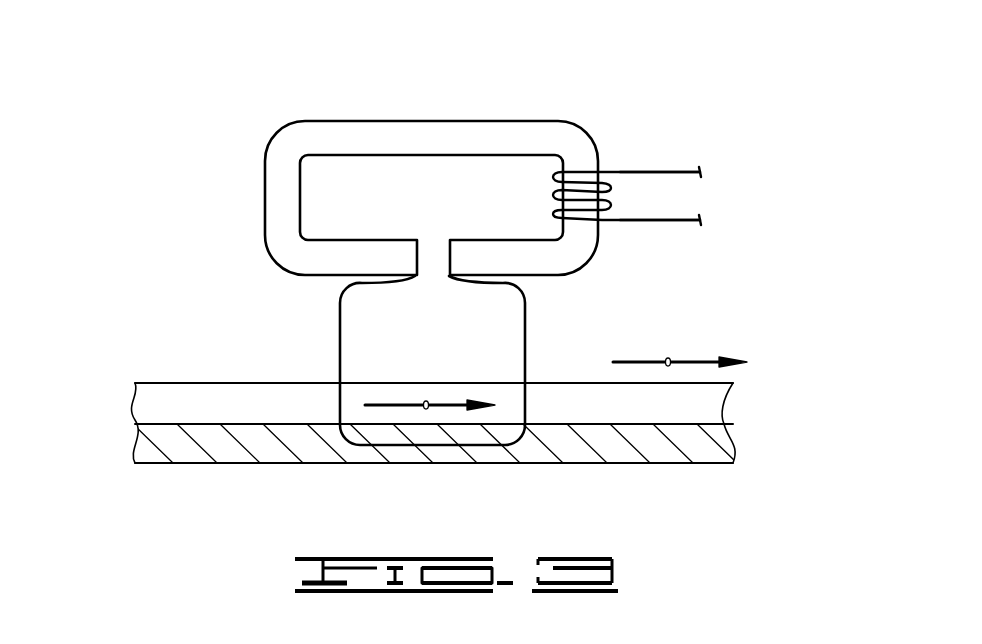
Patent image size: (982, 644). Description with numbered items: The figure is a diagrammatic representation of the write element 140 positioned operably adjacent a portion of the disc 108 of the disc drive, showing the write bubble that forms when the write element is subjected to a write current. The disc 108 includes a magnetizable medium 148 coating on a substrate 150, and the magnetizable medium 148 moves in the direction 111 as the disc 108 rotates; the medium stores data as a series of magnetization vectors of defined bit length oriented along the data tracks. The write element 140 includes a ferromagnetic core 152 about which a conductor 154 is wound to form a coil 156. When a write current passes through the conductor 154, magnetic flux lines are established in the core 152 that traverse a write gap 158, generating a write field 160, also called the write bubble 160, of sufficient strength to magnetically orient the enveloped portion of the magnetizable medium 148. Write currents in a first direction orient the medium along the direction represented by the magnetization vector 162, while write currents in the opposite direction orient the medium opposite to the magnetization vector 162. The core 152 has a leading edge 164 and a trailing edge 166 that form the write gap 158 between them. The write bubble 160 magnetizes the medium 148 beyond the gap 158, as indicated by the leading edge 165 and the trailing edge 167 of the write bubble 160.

The write element 140 is at (270, 93).
The ferromagnetic core 152 is at (440, 133).
The conductor 154 is at (675, 222).
The coil 156 is at (525, 187).
The write gap 158 is at (431, 245).
The write field 160 is at (525, 353).
The magnetization vector 162 is at (425, 400).
The leading edge 164 is at (415, 257).
The trailing edge 166 is at (450, 256).
The leading edge of the write bubble 165 is at (340, 404).
The trailing edge of the write bubble 167 is at (525, 397).
The magnetizable medium 148 is at (170, 400).
The disc 108 is at (727, 425).
The substrate 150 is at (665, 452).
The direction 111 is at (668, 358).